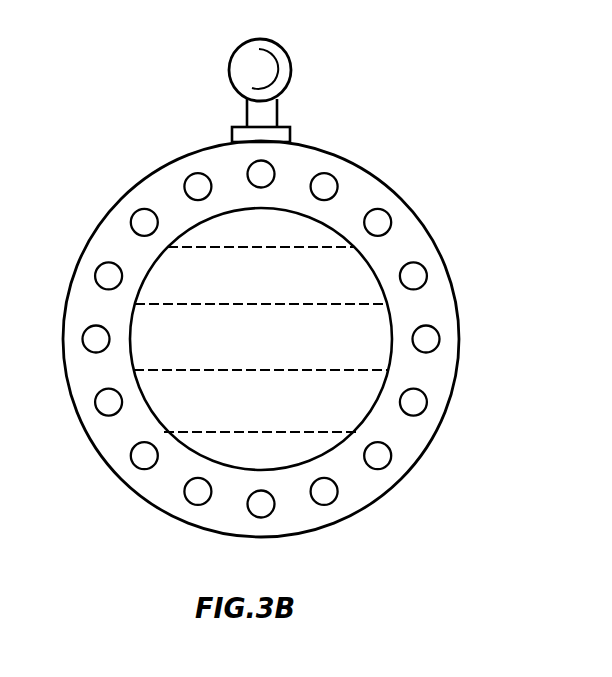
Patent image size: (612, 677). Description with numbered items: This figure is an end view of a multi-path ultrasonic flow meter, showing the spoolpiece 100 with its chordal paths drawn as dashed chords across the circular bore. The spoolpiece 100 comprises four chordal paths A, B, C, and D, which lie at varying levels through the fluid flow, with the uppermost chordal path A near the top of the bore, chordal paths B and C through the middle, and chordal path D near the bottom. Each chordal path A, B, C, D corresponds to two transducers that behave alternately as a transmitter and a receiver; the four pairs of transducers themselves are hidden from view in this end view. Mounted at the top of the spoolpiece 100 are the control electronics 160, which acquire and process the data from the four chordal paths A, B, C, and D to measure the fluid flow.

The spoolpiece 100 is at (296, 339).
The control electronics 160 is at (293, 72).
The chordal path A is at (261, 232).
The chordal path B is at (261, 290).
The chordal path C is at (261, 384).
The chordal path D is at (261, 446).